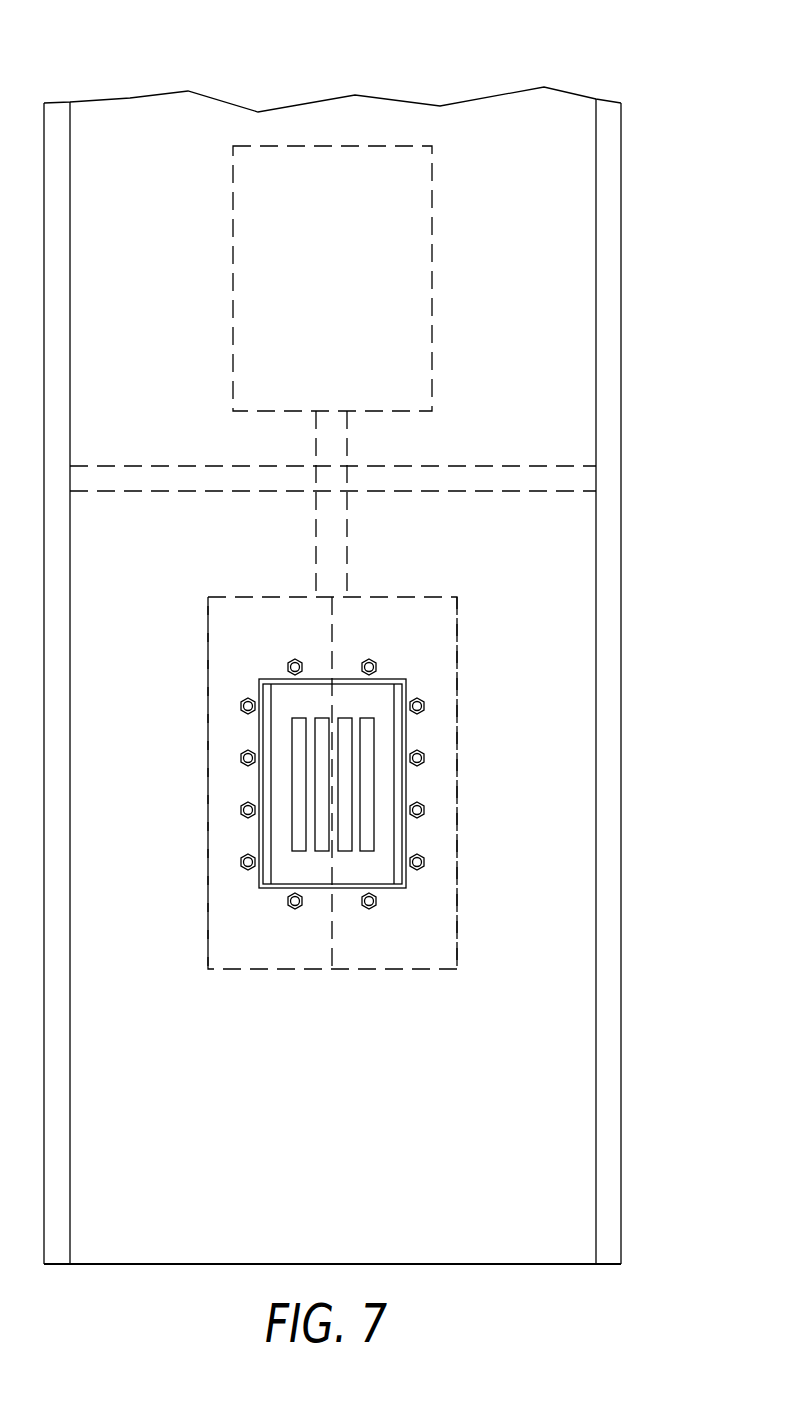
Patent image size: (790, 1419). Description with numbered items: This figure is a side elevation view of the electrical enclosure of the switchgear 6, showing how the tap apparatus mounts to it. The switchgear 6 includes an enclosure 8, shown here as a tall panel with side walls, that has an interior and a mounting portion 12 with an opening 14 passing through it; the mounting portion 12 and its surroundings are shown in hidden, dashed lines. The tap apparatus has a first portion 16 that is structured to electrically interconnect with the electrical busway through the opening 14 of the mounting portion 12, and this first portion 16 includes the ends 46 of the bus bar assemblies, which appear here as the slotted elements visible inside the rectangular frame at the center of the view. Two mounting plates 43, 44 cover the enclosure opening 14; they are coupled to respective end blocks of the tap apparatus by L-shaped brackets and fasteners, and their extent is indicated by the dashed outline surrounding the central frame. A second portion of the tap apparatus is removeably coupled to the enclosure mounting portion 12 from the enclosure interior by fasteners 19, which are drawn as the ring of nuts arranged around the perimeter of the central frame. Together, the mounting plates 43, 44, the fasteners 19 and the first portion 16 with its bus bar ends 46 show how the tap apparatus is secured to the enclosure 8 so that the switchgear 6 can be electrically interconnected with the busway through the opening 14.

The switchgear 6 is at (392, 76).
The enclosure 8 is at (636, 243).
The mounting portion 12 is at (305, 993).
The mounting plate 43 is at (217, 634).
The mounting plate 44 is at (448, 634).
The opening 14 is at (258, 723).
The first portion 16 is at (349, 870).
The ends of the bus bar assemblies 46 is at (388, 787).
The fasteners 19 is at (240, 814).